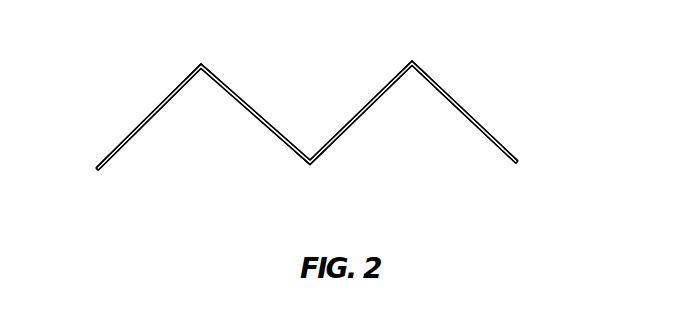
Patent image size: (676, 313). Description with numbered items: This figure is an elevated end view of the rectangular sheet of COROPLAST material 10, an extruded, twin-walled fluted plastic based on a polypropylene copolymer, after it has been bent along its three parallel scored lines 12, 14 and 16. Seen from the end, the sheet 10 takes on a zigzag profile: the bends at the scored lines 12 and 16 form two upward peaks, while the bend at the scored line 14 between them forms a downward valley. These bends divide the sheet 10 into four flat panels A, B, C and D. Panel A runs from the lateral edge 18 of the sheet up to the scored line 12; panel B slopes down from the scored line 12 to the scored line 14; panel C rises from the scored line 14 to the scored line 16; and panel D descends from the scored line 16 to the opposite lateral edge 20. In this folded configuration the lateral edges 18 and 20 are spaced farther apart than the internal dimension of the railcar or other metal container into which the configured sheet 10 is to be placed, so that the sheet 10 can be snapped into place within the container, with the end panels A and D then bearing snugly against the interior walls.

The sheet of COROPLAST material 10 is at (316, 119).
The scored line 12 is at (182, 54).
The scored line 14 is at (339, 181).
The scored line 16 is at (431, 50).
The lateral edge 18 is at (77, 184).
The lateral edge 20 is at (546, 178).
The panel A is at (148, 117).
The panel B is at (255, 96).
The panel C is at (361, 113).
The panel D is at (471, 94).